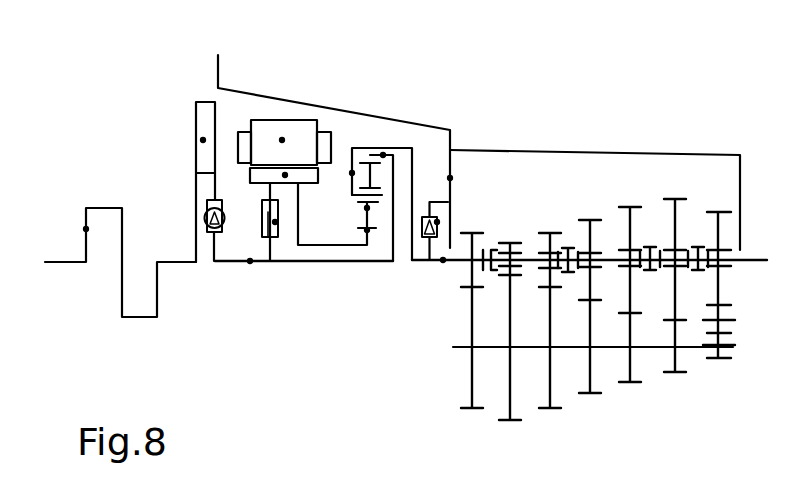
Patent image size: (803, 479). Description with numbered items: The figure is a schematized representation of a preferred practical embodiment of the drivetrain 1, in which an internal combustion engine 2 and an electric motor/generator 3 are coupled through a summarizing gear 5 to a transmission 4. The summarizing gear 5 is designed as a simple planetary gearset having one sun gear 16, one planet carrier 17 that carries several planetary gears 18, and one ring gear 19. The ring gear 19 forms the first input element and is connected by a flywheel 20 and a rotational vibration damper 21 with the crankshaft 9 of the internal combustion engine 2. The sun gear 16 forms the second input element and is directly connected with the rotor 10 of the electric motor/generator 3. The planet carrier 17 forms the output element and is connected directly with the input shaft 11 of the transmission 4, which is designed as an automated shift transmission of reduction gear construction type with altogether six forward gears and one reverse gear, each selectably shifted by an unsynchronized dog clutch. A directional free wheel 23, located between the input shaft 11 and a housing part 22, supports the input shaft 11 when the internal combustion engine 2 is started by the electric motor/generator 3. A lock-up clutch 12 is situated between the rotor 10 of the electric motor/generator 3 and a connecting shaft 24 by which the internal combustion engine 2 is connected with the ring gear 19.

The drivetrain 1 is at (172, 358).
The internal combustion engine 2 is at (80, 295).
The electric motor/generator 3 is at (283, 138).
The transmission 4 is at (592, 165).
The summarizing gear 5 is at (372, 126).
The crankshaft 9 is at (84, 229).
The rotor 10 is at (286, 173).
The input shaft 11 is at (443, 263).
The lock-up clutch 12 is at (276, 224).
The sun gear 16 is at (368, 232).
The planet carrier 17 is at (351, 175).
The planetary gears 18 is at (366, 210).
The ring gear 19 is at (385, 154).
The flywheel 20 is at (201, 140).
The rotational vibration damper 21 is at (215, 228).
The housing part 22 is at (452, 176).
The directional free wheel 23 is at (439, 221).
The connecting shaft 24 is at (251, 263).